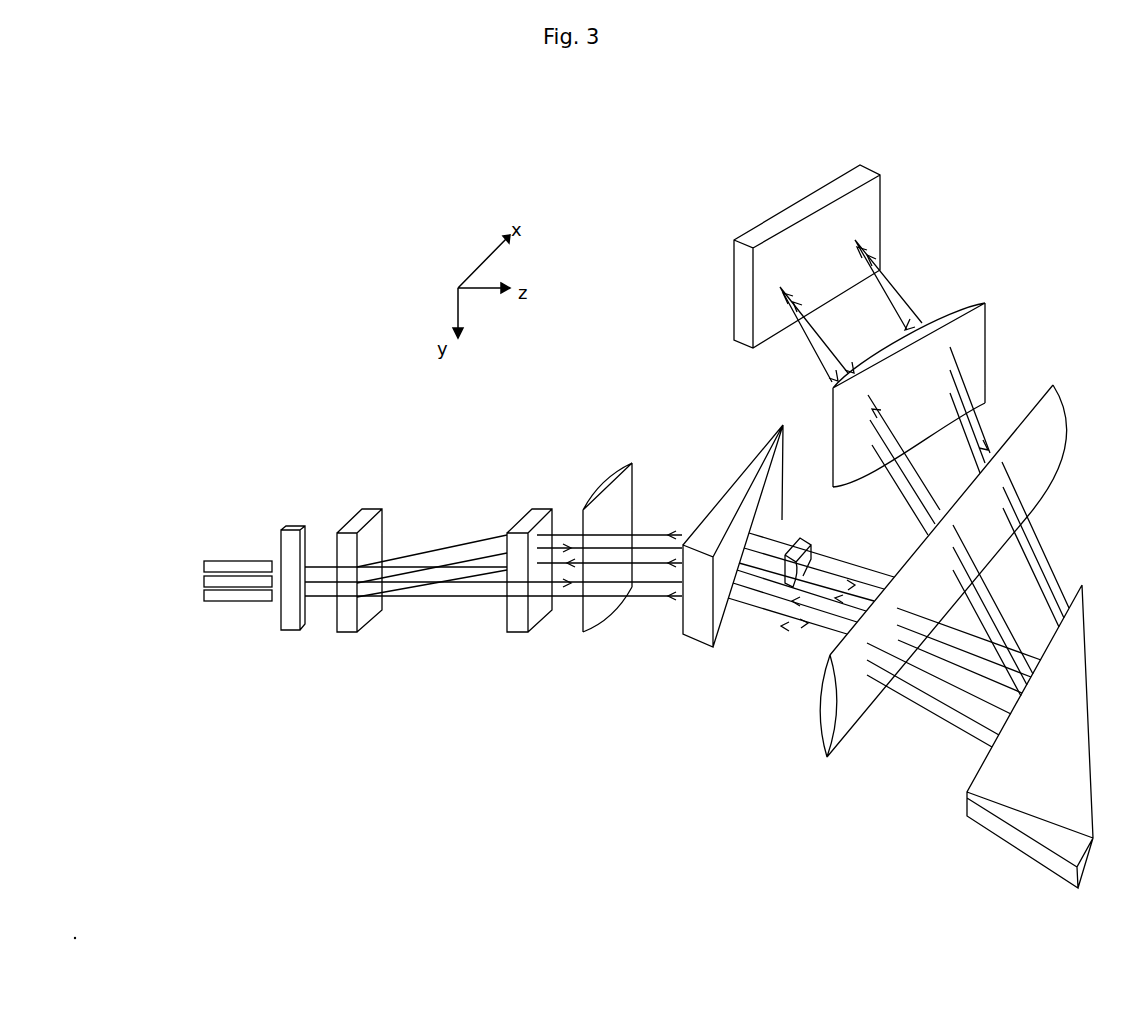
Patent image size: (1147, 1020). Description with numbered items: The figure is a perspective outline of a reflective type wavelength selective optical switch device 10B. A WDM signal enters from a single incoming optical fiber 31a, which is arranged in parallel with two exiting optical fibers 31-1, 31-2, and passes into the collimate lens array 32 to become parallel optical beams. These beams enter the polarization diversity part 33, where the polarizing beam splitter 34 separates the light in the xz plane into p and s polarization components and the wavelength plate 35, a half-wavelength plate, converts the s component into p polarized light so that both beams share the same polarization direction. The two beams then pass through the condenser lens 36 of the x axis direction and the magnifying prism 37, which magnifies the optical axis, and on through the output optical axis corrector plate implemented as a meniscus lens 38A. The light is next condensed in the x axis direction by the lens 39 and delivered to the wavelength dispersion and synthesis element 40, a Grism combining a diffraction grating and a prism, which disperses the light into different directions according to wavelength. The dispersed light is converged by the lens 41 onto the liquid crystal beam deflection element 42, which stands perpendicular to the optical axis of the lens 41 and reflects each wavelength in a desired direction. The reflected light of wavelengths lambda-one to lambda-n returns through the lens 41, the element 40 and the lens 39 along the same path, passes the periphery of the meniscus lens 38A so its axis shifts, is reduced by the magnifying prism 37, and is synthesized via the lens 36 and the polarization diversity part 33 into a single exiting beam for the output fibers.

The wavelength selective optical switch device 10B is at (1063, 242).
The exiting optical fiber 31-1 is at (232, 559).
The exiting optical fiber 31-2 is at (229, 604).
The incoming optical fiber 31a is at (204, 580).
The collimate lens array 32 is at (298, 530).
The polarization diversity part 33 is at (523, 463).
The polarizing beam splitter 34 is at (370, 508).
The wavelength plate 35 is at (529, 508).
The condenser lens 36 is at (611, 472).
The magnifying prism 37 is at (744, 458).
The meniscus lens 38A is at (808, 543).
The lens 39 is at (816, 706).
The wavelength dispersion and synthesis element 40 is at (993, 836).
The lens 41 is at (985, 314).
The liquid crystal beam deflection element 42 is at (777, 214).